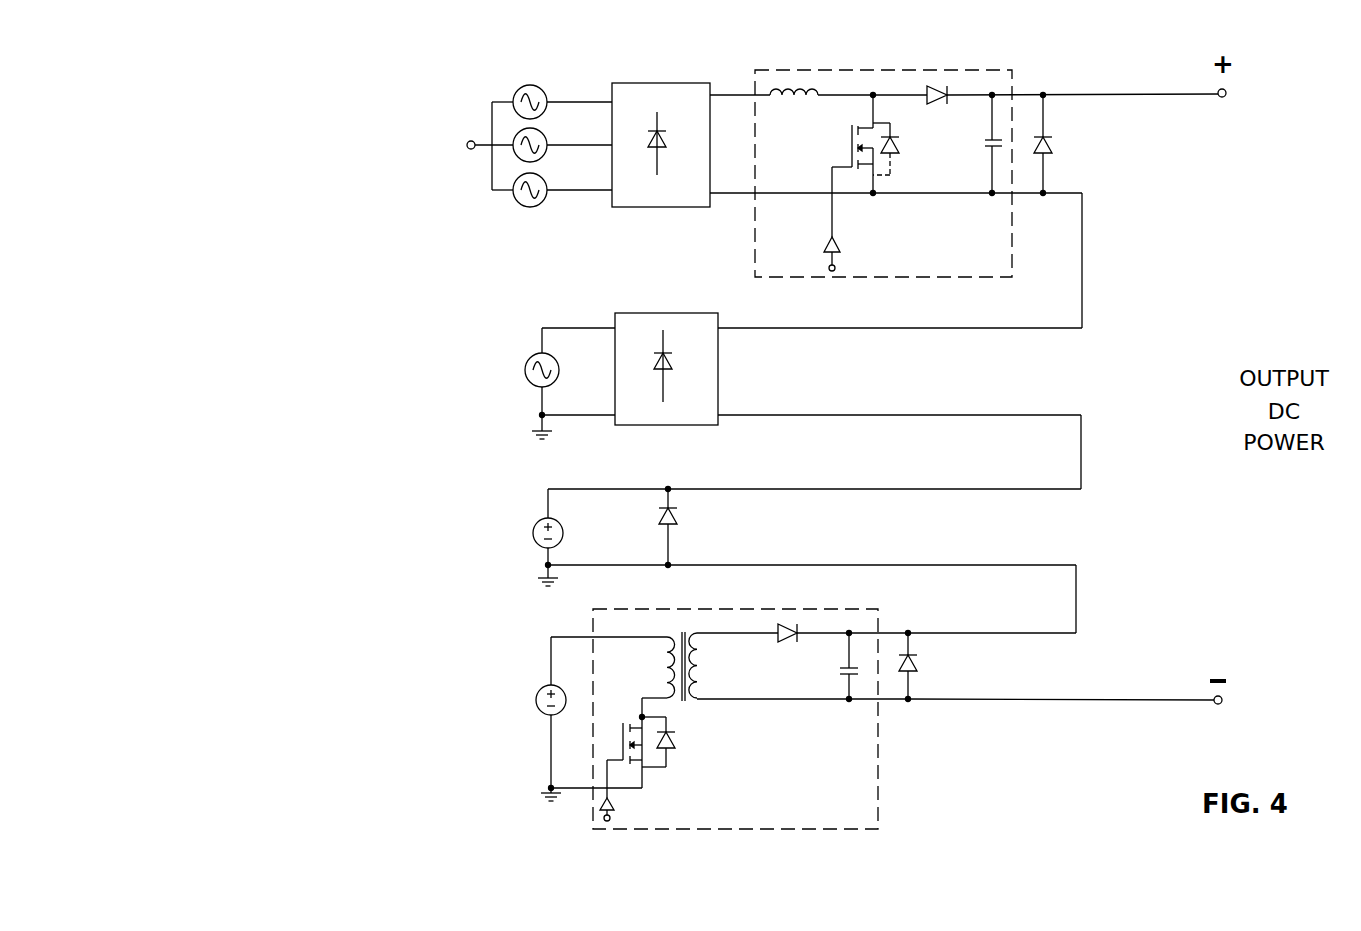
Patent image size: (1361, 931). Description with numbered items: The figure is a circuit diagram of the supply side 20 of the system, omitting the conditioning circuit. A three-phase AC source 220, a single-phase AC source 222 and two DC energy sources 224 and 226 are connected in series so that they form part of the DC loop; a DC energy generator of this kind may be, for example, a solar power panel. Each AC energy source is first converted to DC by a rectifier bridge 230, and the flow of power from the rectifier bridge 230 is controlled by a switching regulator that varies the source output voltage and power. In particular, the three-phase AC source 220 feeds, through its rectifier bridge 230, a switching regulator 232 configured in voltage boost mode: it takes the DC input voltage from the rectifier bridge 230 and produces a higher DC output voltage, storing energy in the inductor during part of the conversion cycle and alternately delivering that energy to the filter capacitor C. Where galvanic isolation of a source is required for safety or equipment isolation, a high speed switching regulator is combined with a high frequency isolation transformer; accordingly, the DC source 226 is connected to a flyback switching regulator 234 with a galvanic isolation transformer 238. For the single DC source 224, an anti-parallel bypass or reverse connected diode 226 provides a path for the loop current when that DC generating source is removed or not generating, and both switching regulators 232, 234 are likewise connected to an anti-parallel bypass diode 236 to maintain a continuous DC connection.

The supply side 20 is at (253, 113).
The three-phase AC source 220 is at (466, 162).
The single-phase AC source 222 is at (491, 380).
The DC energy source 224 is at (467, 537).
The DC energy source / reverse connected diode 226 is at (676, 489).
The rectifier bridge 230 is at (658, 83).
The switching regulator 232 is at (829, 70).
The flyback switching regulator 234 is at (722, 609).
The anti-parallel bypass diode 236 is at (1047, 128).
The galvanic isolation transformer 238 is at (691, 716).